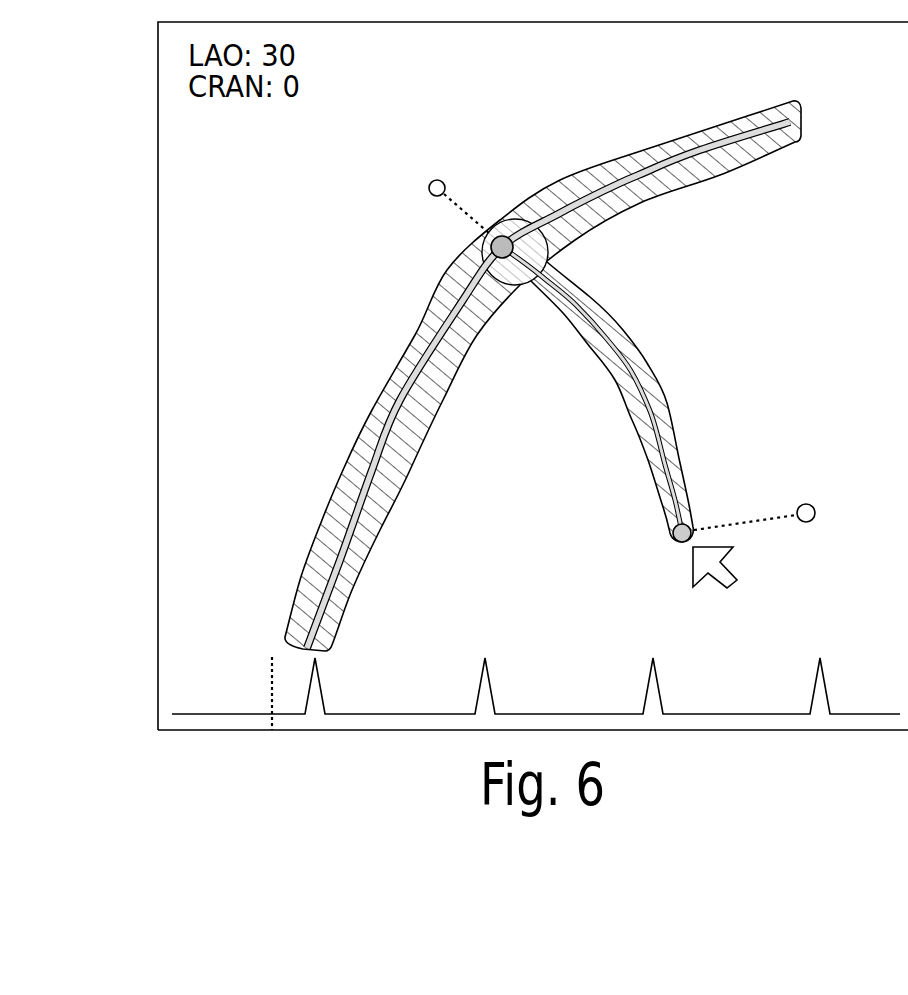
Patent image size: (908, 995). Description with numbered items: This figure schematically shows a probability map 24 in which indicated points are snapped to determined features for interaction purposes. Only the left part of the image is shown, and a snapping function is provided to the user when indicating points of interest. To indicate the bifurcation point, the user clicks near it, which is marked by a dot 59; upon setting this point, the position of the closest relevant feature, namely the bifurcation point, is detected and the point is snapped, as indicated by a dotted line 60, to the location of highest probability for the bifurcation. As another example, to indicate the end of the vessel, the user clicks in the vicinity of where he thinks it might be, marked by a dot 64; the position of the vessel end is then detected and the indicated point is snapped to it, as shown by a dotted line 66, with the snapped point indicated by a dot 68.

The probability map 24 is at (195, 332).
The dot 59 is at (437, 180).
The dotted line 60 is at (480, 233).
The dot 64 is at (809, 522).
The dotted line 66 is at (748, 521).
The dot 68 is at (681, 546).